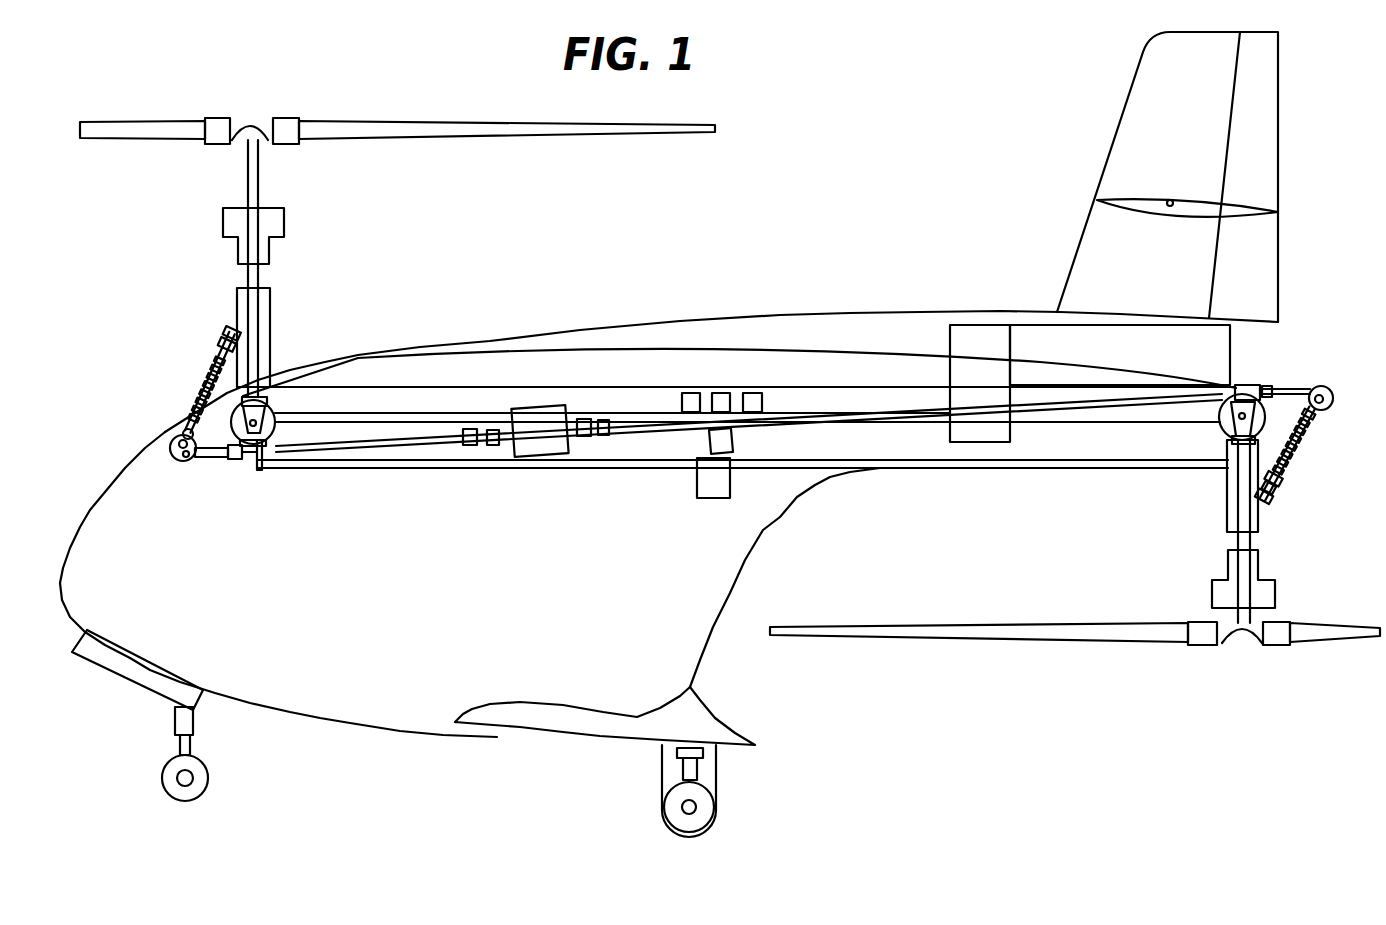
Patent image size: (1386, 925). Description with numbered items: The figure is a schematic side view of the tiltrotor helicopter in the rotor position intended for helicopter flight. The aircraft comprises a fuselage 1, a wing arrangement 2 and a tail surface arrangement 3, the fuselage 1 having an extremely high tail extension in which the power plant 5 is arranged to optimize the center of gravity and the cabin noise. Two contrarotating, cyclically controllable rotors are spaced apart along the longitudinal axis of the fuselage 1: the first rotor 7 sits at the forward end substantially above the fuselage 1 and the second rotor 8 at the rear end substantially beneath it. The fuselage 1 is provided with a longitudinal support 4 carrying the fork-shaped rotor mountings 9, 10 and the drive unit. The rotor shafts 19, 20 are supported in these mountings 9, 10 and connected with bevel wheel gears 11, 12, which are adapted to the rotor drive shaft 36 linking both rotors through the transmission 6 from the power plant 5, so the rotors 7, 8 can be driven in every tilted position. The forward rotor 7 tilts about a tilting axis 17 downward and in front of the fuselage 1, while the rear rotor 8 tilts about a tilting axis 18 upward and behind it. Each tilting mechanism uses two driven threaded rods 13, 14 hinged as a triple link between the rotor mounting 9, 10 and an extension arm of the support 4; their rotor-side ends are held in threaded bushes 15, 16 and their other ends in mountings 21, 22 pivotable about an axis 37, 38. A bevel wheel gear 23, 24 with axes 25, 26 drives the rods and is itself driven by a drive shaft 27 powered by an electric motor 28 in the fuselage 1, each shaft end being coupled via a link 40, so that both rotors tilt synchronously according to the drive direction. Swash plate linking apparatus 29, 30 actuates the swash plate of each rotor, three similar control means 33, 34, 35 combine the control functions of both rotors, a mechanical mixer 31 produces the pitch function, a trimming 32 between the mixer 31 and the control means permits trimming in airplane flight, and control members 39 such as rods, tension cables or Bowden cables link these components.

The fuselage 1 is at (162, 598).
The wing arrangement 2 is at (543, 722).
The tail surface arrangement 3 is at (1178, 100).
The support 4 is at (617, 387).
The power plant 5 is at (1035, 342).
The transmission 6 is at (972, 347).
The first rotor 7 is at (258, 120).
The second rotor 8 is at (1258, 642).
The rotor mounting 9 is at (262, 292).
The rotor mounting 10 is at (1227, 493).
The bevel wheel gear 11 is at (244, 460).
The bevel wheel gear 12 is at (1262, 390).
The threaded rod 13 is at (1282, 486).
The threaded rod 14 is at (222, 358).
The threaded bush 15 is at (1280, 505).
The threaded bush 16 is at (223, 338).
The tilting axis 17 is at (262, 417).
The tilting axis 18 is at (1222, 462).
The rotor shaft 19 is at (258, 166).
The rotor shaft 20 is at (1238, 538).
The mounting 21 is at (1322, 410).
The mounting 22 is at (183, 428).
The bevel wheel gear 23 is at (170, 448).
The bevel wheel gear 24 is at (1334, 393).
The axis 25 is at (1266, 510).
The axis 26 is at (230, 332).
The drive shaft 27 is at (437, 437).
The electric motor 28 is at (525, 433).
The swash plate linking apparatus 29 is at (272, 224).
The swash plate linking apparatus 30 is at (1262, 597).
The mechanical mixer 31 is at (717, 485).
The trimming 32 is at (723, 440).
The control means 33 is at (690, 397).
The control means 34 is at (720, 397).
The control means 35 is at (753, 397).
The rotor drive shaft 36 is at (917, 420).
The axis 37 is at (1324, 386).
The axis 38 is at (187, 461).
The control members 39 is at (577, 468).
The link 40 is at (468, 448).